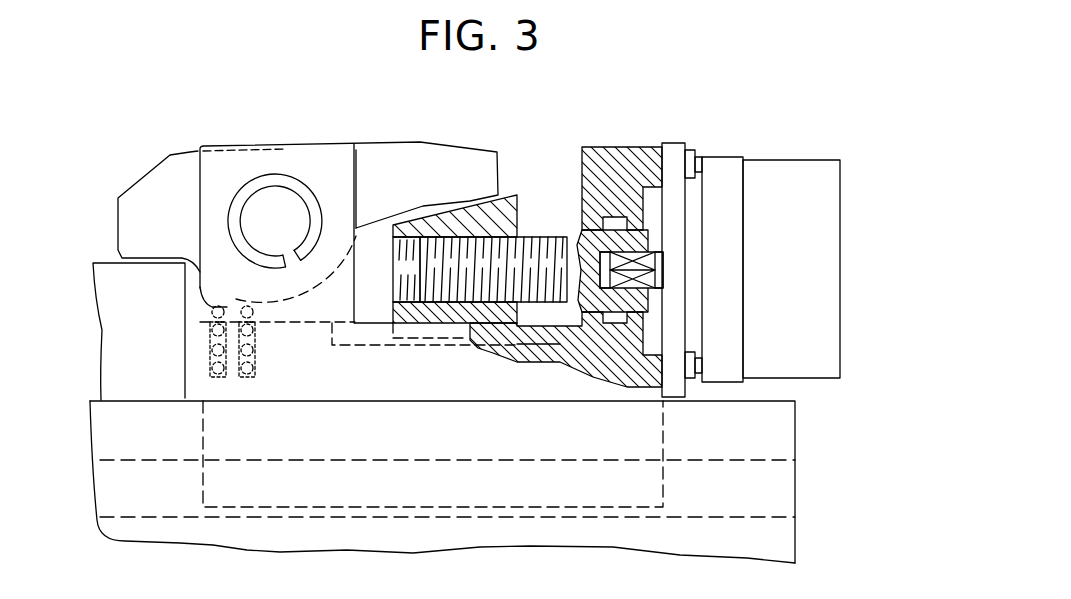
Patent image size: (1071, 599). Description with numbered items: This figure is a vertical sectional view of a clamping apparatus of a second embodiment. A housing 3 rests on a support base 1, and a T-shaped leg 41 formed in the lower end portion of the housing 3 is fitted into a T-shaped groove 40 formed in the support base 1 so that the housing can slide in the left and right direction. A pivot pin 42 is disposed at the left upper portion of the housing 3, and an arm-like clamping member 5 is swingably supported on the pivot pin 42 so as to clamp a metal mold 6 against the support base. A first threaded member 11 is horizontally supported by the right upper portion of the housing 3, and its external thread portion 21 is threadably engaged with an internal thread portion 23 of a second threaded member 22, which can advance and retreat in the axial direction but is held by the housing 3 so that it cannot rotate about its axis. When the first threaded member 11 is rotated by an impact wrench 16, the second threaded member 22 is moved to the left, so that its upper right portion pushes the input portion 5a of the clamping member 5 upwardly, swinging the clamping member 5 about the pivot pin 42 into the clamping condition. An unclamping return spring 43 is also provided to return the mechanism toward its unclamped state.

The support base 1 is at (800, 433).
The housing 3 is at (628, 140).
The clamping member 5 is at (158, 158).
The input portion 5a is at (456, 167).
The metal mold 6 is at (102, 280).
The first threaded member 11 is at (610, 214).
The impact wrench 16 is at (720, 149).
The external thread portion 21 is at (544, 226).
The second threaded member 22 is at (511, 184).
The internal thread portion 23 is at (392, 237).
The T-shaped groove 40 is at (718, 522).
The T-shaped leg 41 is at (665, 449).
The pivot pin 42 is at (289, 197).
The unclamping return spring 43 is at (255, 368).